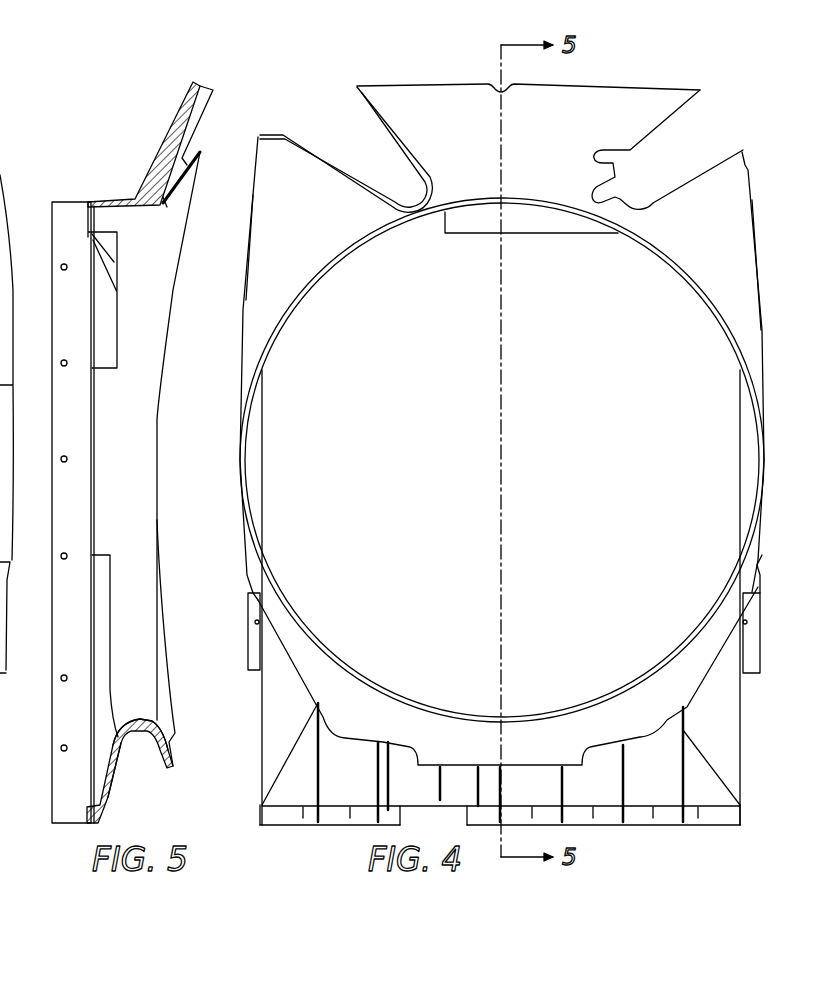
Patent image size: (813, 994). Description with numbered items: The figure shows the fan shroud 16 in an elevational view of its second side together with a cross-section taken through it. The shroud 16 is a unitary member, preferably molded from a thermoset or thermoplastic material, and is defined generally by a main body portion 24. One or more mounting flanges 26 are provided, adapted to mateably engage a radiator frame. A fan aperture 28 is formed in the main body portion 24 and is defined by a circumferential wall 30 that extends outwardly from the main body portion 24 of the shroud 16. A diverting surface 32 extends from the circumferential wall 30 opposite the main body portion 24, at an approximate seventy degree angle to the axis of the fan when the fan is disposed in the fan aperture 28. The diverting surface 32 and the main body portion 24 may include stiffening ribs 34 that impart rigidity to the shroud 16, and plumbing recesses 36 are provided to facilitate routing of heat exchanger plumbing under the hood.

In FIG. 4, the fan shroud 16 is at (619, 74).
In FIG. 5, the fan shroud 16 is at (97, 165).
In FIG. 4, the main body portion 24 is at (723, 755).
In FIG. 5, the main body portion 24 is at (107, 740).
In FIG. 4, the mounting flange 26 is at (243, 305).
In FIG. 5, the mounting flange 26 is at (60, 703).
In FIG. 4, the fan aperture 28 is at (446, 439).
In FIG. 4, the circumferential wall 30 is at (553, 712).
In FIG. 5, the circumferential wall 30 is at (138, 717).
In FIG. 4, the diverting surface 32 is at (670, 102).
In FIG. 5, the diverting surface 32 is at (203, 98).
In FIG. 4, the stiffening ribs 34 is at (687, 853).
In FIG. 5, the stiffening ribs 34 is at (172, 130).
In FIG. 4, the plumbing recesses 36 is at (343, 138).